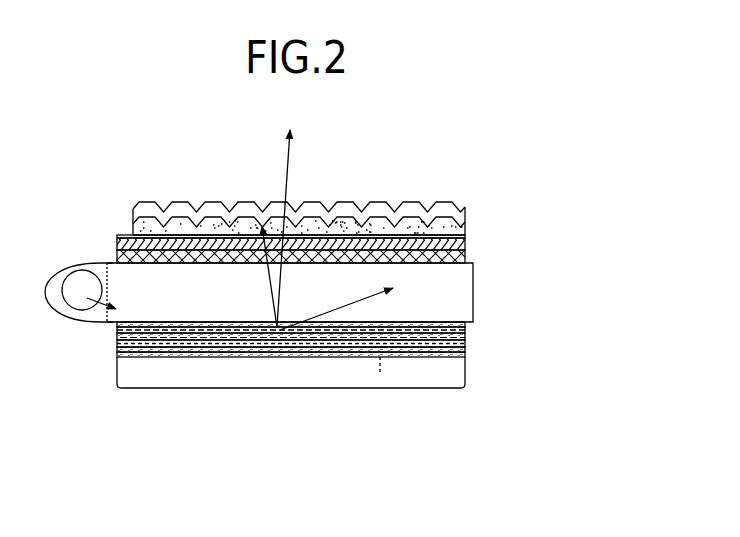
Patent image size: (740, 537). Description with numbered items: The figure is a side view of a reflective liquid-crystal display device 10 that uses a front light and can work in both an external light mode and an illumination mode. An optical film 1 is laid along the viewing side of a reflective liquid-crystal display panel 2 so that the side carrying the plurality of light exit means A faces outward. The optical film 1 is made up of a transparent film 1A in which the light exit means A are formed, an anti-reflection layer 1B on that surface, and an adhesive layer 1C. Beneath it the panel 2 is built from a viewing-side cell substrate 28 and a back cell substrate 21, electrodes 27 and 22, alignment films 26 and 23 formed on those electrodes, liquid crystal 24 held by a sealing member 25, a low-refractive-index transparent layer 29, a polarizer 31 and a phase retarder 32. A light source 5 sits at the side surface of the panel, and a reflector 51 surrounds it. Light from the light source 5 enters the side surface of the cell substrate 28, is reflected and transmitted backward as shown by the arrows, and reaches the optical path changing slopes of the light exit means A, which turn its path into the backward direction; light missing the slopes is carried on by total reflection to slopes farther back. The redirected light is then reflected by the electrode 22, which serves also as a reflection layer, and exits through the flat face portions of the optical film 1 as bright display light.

The optical film 1 is at (358, 189).
The transparent film 1A is at (467, 225).
The anti-reflection layer 1B is at (467, 207).
The adhesive layer 1C is at (467, 237).
The reflective liquid-crystal display panel 2 is at (357, 360).
The light source 5 is at (77, 297).
The reflective liquid-crystal display device 10 is at (607, 167).
The cell substrate 21 is at (334, 422).
The electrode 22 is at (467, 348).
The alignment film 23 is at (467, 343).
The liquid crystal 24 is at (378, 390).
The sealing member 25 is at (467, 339).
The alignment film 26 is at (467, 335).
The electrode 27 is at (467, 331).
The cell substrate 28 is at (463, 288).
The low-refractive-index transparent layer 29 is at (467, 326).
The polarizer 31 is at (467, 246).
The phase retarder 32 is at (467, 257).
The reflector 51 is at (82, 262).
The light exit means A is at (355, 208).